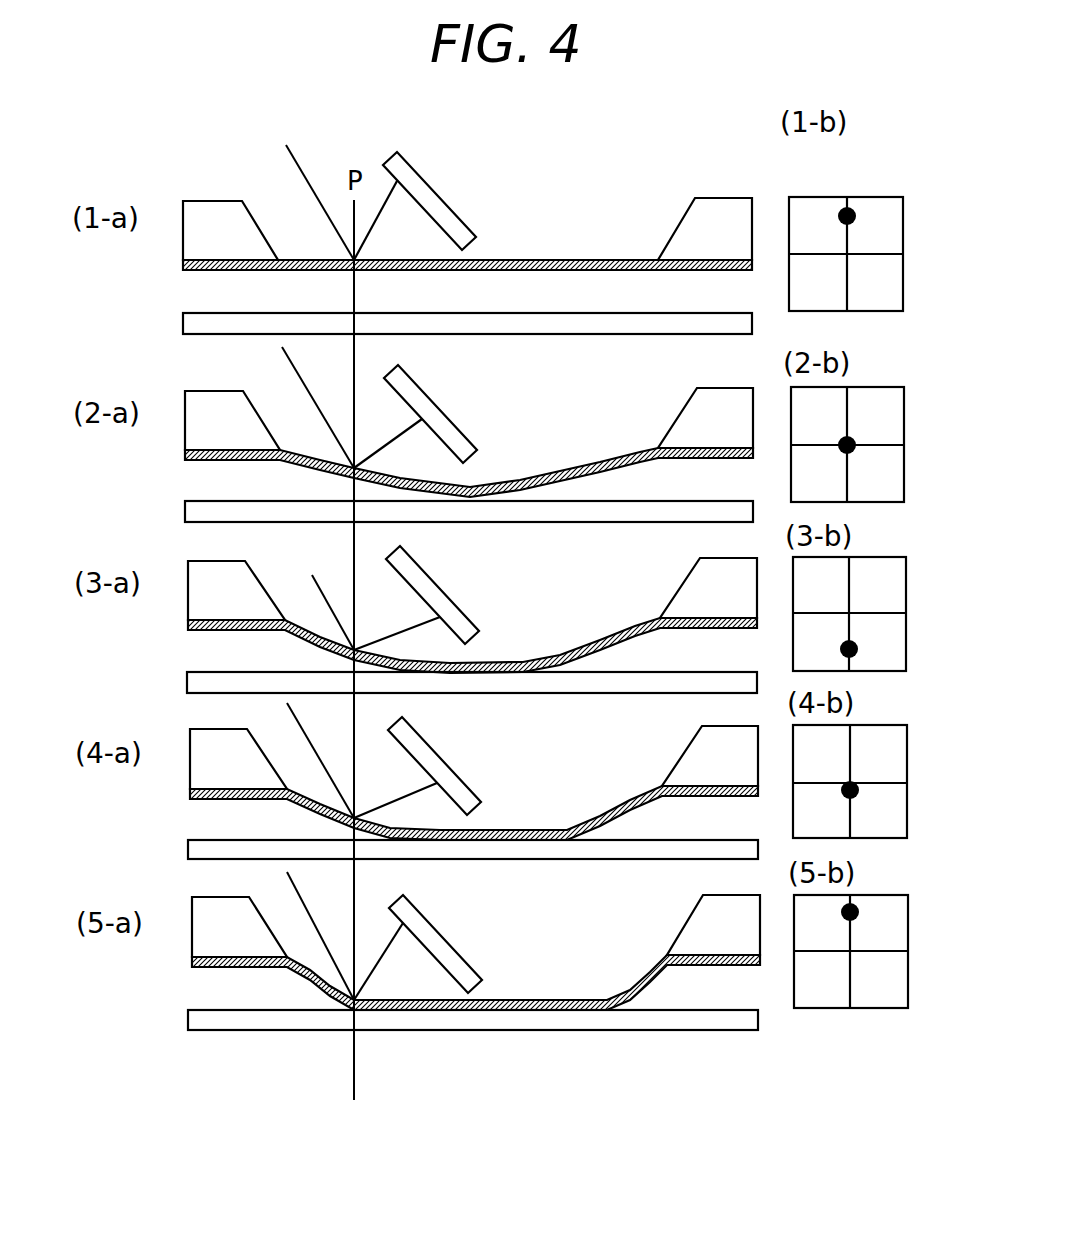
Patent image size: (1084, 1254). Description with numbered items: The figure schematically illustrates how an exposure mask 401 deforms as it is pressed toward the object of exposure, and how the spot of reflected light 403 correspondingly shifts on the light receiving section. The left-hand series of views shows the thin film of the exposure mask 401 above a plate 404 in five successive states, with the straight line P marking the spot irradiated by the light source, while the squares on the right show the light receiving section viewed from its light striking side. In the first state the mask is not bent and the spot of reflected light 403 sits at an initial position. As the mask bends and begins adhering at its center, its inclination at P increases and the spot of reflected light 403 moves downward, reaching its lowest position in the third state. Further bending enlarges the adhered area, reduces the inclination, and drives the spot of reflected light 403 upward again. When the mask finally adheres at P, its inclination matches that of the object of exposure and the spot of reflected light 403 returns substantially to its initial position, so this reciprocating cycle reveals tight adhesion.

The exposure mask 401 is at (313, 260).
The spot of reflected light 403 is at (840, 216).
The glass plate 404 is at (205, 313).